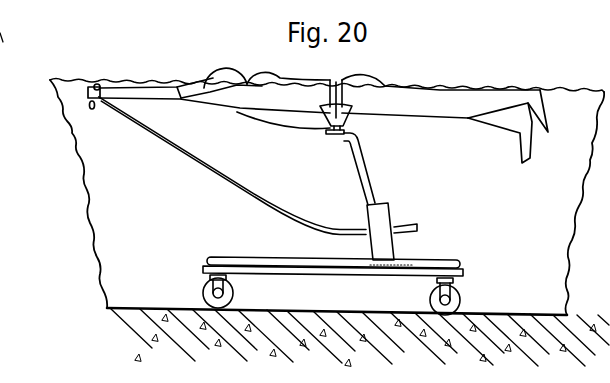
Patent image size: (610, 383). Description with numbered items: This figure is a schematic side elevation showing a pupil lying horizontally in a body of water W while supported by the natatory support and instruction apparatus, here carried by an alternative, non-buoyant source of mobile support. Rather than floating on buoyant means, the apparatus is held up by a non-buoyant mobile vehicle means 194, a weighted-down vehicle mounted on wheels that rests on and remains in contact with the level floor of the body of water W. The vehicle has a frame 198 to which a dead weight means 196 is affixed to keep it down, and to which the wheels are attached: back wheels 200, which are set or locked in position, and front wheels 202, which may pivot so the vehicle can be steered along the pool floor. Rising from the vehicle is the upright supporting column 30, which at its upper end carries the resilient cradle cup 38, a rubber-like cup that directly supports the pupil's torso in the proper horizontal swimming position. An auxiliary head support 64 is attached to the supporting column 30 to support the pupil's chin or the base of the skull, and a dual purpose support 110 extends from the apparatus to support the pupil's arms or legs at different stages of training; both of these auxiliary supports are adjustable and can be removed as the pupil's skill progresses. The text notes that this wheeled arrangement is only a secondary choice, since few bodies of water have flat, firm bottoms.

The upright supporting column 30 is at (375, 173).
The resilient cradle cup 38 is at (360, 121).
The auxiliary head support 64 is at (268, 119).
The dual purpose support 110 is at (191, 177).
The non-buoyant mobile vehicle means 194 is at (264, 248).
The dead weight means 196 is at (440, 262).
The frame 198 is at (333, 270).
The back wheels 200 is at (450, 292).
The front wheels 202 is at (214, 279).
The body of water W is at (100, 269).